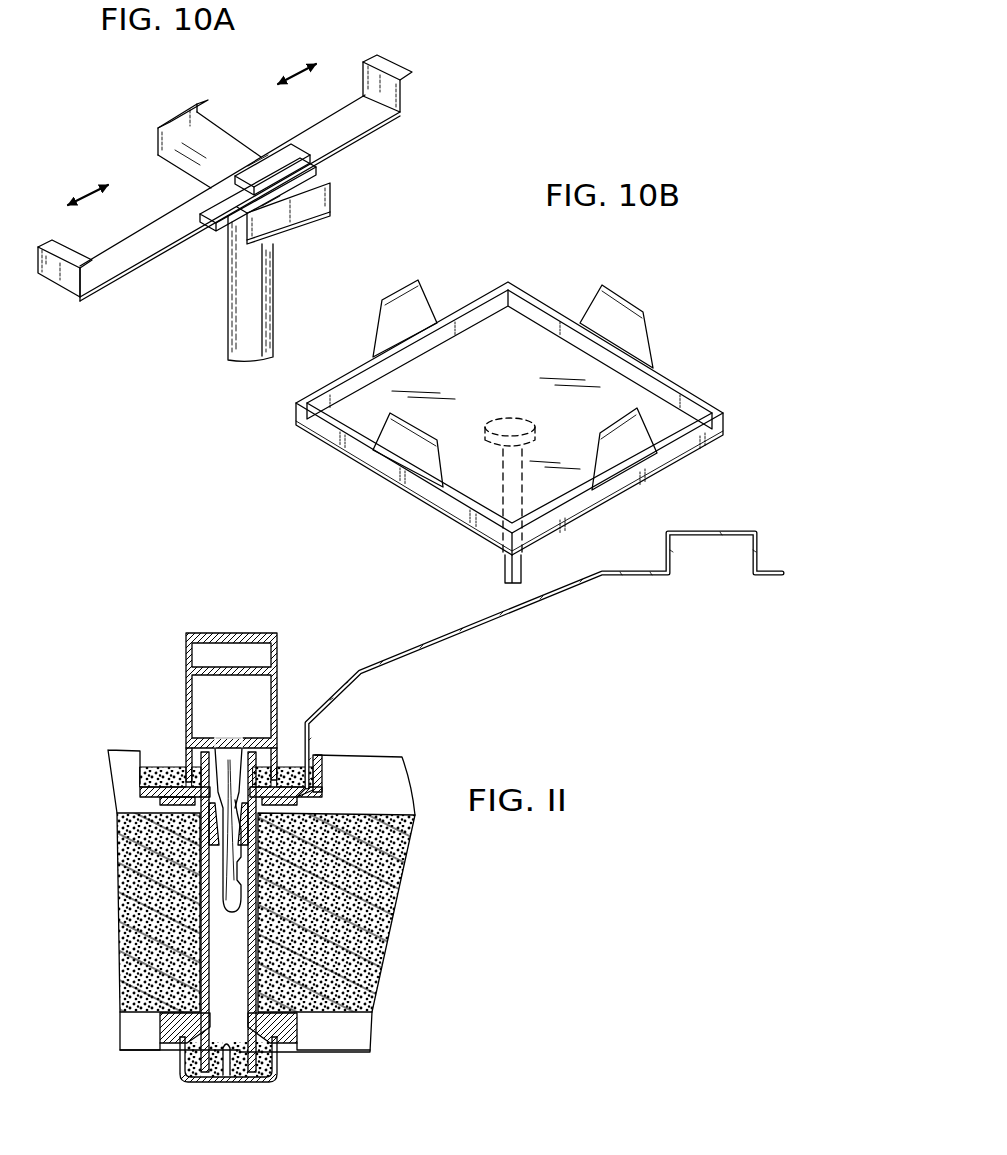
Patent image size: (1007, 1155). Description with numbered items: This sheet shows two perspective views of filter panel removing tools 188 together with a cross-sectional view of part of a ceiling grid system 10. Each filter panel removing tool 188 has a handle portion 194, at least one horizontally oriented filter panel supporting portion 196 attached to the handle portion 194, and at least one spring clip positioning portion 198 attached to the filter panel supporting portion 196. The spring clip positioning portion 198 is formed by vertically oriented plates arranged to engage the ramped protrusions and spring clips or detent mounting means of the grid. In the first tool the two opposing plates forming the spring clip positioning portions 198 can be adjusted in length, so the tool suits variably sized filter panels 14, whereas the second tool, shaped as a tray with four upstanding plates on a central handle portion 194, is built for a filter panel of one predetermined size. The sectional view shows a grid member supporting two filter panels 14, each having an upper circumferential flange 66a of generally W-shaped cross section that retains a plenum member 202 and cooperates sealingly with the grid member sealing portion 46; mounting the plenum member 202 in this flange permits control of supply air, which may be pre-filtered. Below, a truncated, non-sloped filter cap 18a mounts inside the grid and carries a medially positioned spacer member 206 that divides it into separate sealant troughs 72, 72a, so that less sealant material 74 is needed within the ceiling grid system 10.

In FIG. 11, the ceiling grid system 10 is at (150, 641).
In FIG. 11, the filter panel 14 is at (138, 807).
In FIG. 11, the truncated filter cap 18a is at (184, 1082).
In FIG. 11, the grid member sealing portion 46 is at (186, 768).
In FIG. 11, the upper circumferential flange 66a is at (318, 788).
In FIG. 11, the sealant trough 72 is at (206, 1073).
In FIG. 11, the sealant trough 72a is at (257, 1073).
In FIG. 11, the sealant material 74 is at (262, 1062).
In FIG. 10A, the filter panel removing tool 188 is at (424, 181).
In FIG. 10B, the filter panel removing tool 188 is at (575, 266).
In FIG. 10A, the handle portion 194 is at (275, 306).
In FIG. 10B, the handle portion 194 is at (503, 569).
In FIG. 10A, the filter panel supporting portion 196 is at (205, 150).
In FIG. 10B, the filter panel supporting portion 196 is at (511, 385).
In FIG. 10A, the spring clip positioning portion 198 is at (55, 249).
In FIG. 10B, the spring clip positioning portion 198 is at (423, 290).
In FIG. 11, the plenum member 202 is at (443, 645).
In FIG. 11, the spacer member 206 is at (227, 1044).